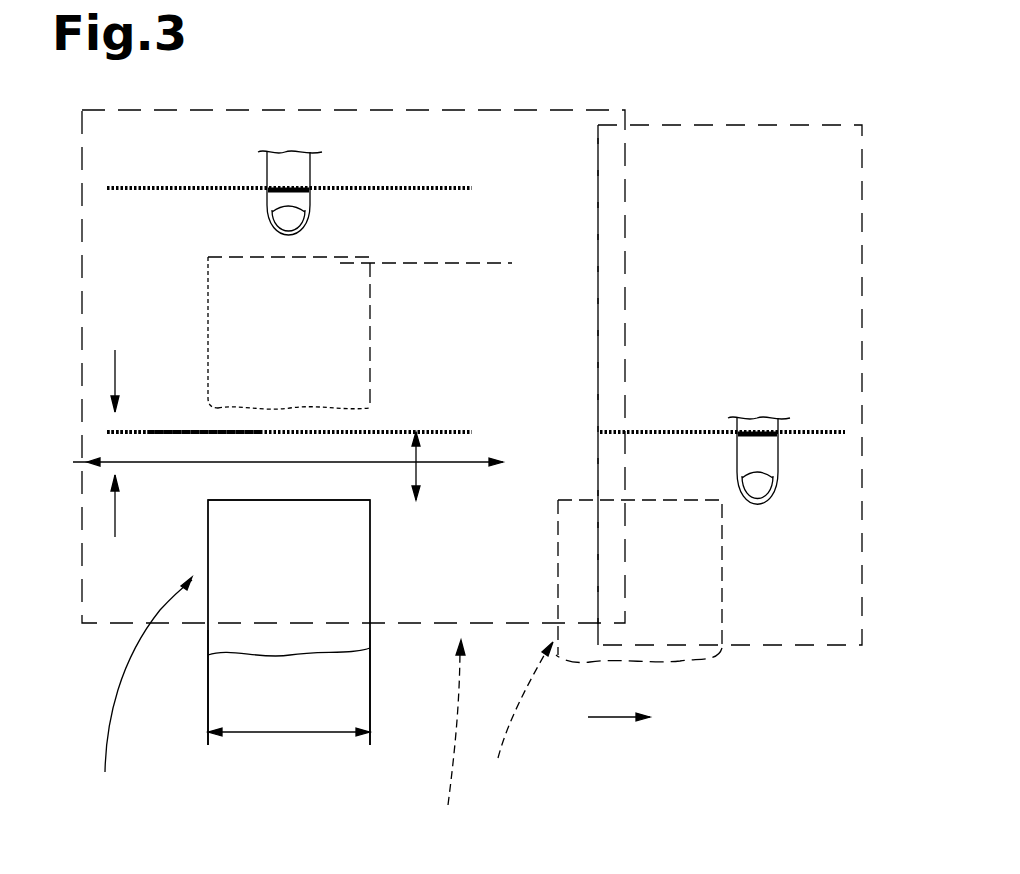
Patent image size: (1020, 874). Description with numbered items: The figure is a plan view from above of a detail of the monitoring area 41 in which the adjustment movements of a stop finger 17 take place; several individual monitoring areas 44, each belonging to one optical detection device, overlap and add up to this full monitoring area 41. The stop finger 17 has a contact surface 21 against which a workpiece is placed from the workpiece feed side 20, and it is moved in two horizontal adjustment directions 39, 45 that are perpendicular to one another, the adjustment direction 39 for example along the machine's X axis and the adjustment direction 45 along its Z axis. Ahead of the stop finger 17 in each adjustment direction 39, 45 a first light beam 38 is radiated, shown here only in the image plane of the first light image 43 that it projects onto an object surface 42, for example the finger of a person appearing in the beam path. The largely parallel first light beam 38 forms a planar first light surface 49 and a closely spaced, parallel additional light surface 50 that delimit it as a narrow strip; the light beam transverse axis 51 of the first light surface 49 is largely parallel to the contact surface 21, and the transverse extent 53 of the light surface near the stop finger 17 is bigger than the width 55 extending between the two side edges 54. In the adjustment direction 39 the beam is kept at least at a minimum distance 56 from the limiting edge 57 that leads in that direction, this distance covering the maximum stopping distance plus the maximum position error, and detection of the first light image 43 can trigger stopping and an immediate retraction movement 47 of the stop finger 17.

The stop finger 17 is at (325, 692).
The workpiece feed side 20 is at (567, 192).
The contact surface 21 is at (281, 492).
The first light beam 38 is at (192, 197).
The adjustment direction 39 is at (112, 513).
The monitoring area 41 is at (451, 744).
The object surface 42 is at (292, 180).
The first light image 43 is at (312, 188).
The individual monitoring area 44 is at (105, 593).
The adjustment direction 45 is at (604, 717).
The retraction movement 47 is at (112, 362).
The first light surface 49 is at (158, 428).
The additional light surface 50 is at (174, 436).
The light beam transverse axis 51 is at (482, 262).
The transverse extent 53 is at (452, 465).
The side edges 54 is at (198, 628).
The width 55 is at (290, 738).
The minimum distance 56 is at (420, 470).
The limiting edge 57 is at (289, 622).